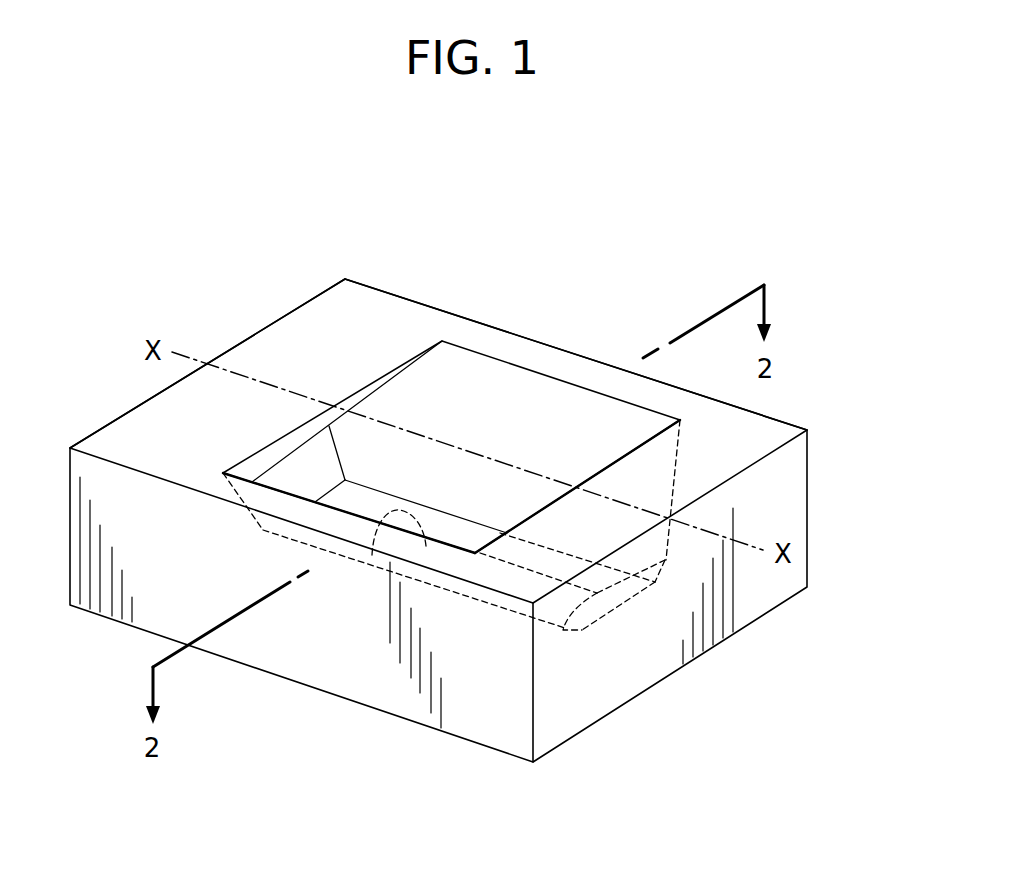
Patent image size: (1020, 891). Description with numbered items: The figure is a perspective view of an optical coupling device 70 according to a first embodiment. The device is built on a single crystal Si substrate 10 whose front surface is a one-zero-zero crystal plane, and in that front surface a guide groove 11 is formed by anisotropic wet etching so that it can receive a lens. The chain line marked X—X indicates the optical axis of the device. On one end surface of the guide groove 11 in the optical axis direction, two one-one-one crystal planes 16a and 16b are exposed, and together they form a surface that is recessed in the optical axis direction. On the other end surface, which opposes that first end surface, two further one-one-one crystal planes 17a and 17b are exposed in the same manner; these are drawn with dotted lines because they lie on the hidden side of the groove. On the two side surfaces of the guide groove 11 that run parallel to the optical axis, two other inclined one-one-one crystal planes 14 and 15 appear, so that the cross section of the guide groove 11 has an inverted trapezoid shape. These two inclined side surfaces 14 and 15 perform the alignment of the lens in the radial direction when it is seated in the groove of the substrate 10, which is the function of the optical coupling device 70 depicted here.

The optical coupling device 70 is at (614, 356).
The single crystal Si substrate 10 is at (647, 664).
The guide groove 11 is at (489, 422).
The {111} plane side surface 14 is at (578, 422).
The {111} plane side surface 15 is at (372, 558).
The {111} plane 16a is at (352, 410).
The {111} plane 16b is at (306, 470).
The {111} plane 17a is at (520, 570).
The {111} plane 17b is at (563, 632).